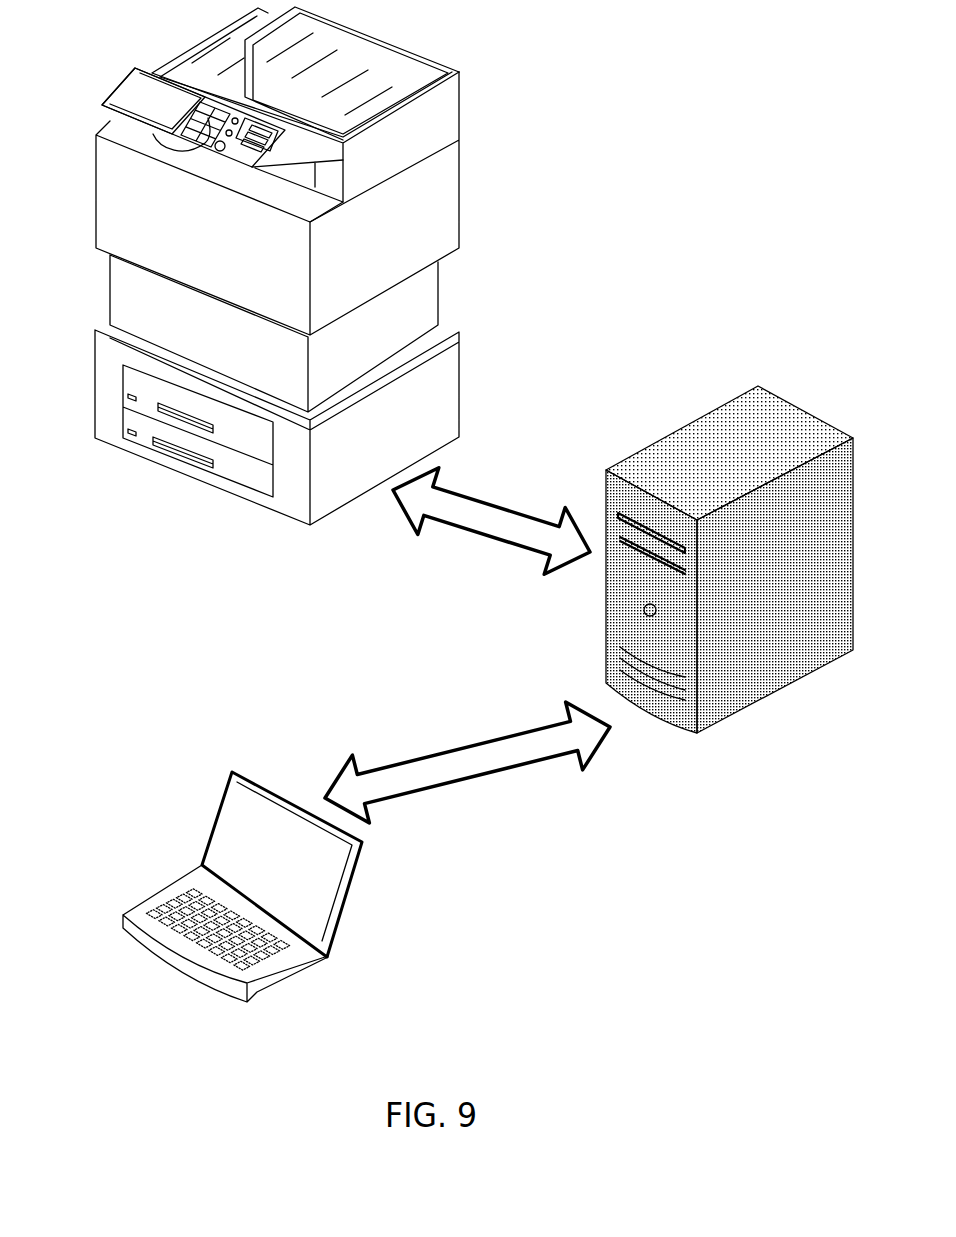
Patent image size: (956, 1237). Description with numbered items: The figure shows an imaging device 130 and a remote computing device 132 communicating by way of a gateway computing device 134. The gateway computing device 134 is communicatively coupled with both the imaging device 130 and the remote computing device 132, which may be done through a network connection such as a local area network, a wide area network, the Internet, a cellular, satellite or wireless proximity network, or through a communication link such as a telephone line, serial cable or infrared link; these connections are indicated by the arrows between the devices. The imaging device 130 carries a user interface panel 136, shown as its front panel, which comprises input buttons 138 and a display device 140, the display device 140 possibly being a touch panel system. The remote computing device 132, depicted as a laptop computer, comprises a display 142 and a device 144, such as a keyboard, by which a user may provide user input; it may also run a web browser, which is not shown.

The imaging device 130 is at (235, 266).
The remote computing device 132 is at (267, 897).
The gateway computing device 134 is at (768, 673).
The user interface panel 136 is at (246, 155).
The input buttons 138 is at (182, 134).
The display device 140 is at (127, 93).
The display 142 is at (323, 887).
The device by which a user may provide user input 144 is at (253, 967).